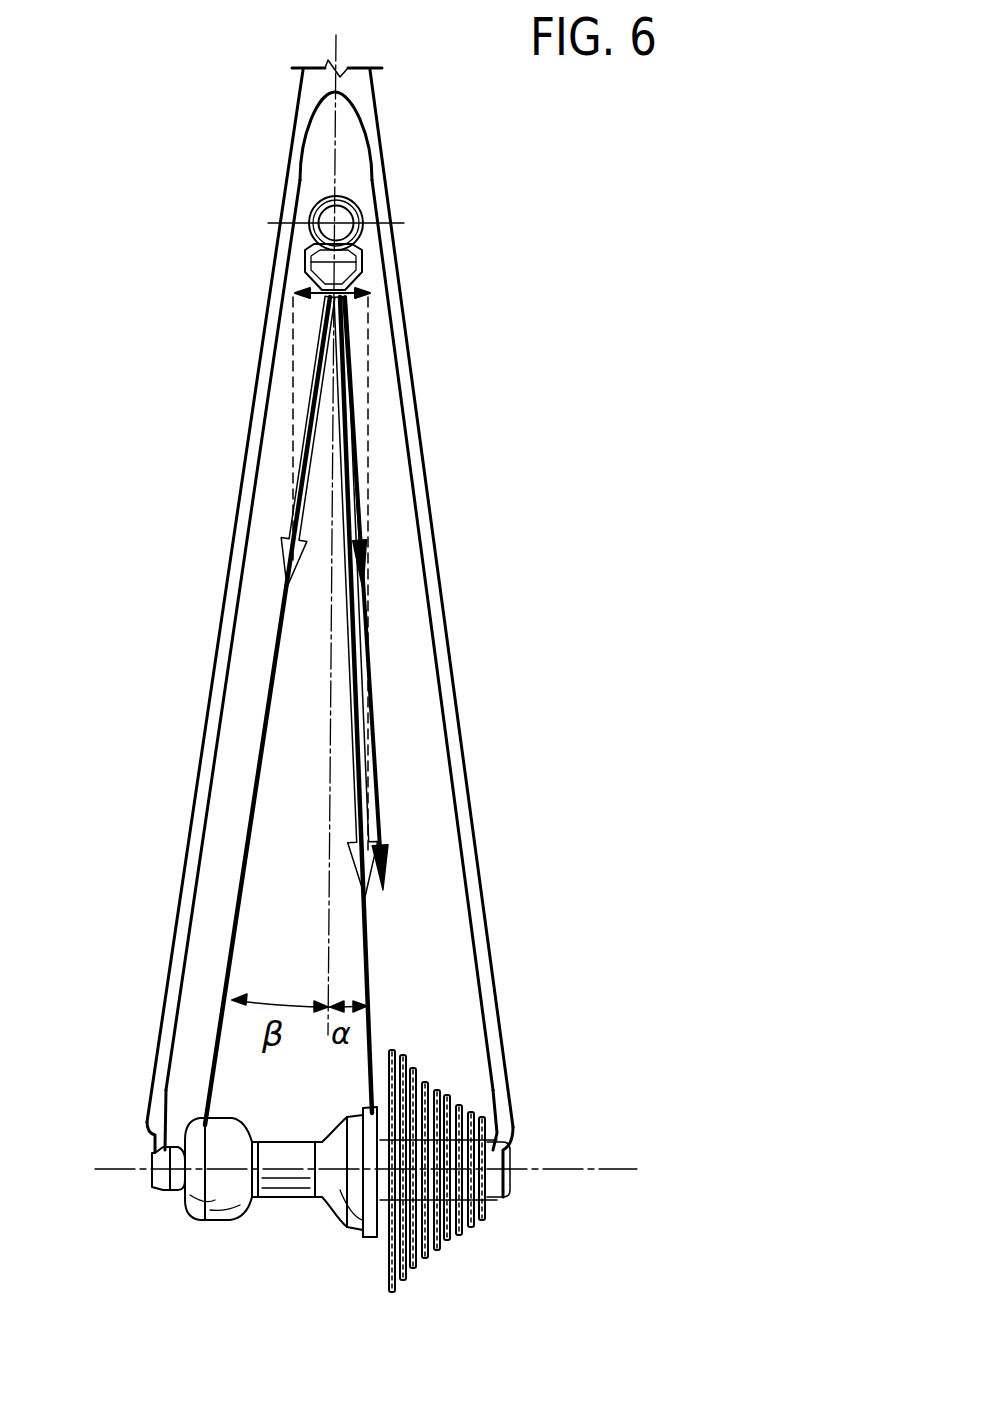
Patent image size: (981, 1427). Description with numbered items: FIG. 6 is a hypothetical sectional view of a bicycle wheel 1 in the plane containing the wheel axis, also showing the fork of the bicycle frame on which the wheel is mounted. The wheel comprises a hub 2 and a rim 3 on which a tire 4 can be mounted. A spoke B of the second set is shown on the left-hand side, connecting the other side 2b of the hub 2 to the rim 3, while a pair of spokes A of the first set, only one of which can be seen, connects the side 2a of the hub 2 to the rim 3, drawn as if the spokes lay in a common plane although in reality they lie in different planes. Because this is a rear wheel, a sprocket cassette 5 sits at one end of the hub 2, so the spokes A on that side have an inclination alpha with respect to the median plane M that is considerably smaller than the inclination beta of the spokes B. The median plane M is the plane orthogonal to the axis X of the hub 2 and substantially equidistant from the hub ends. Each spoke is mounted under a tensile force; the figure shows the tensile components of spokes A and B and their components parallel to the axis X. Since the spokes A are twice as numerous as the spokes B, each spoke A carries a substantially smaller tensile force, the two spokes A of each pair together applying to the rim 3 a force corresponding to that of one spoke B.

The bicycle wheel 1 is at (485, 476).
The hub 2 is at (218, 1211).
The side of the hub 2a is at (375, 1237).
The other side of the hub 2b is at (195, 1190).
The rim 3 is at (362, 262).
The tire 4 is at (352, 202).
The sprocket cassette 5 is at (448, 1052).
The spokes of the first set A is at (370, 937).
The spokes of the second set B is at (242, 868).
The median plane M is at (328, 887).
The axis of the hub X is at (588, 1170).